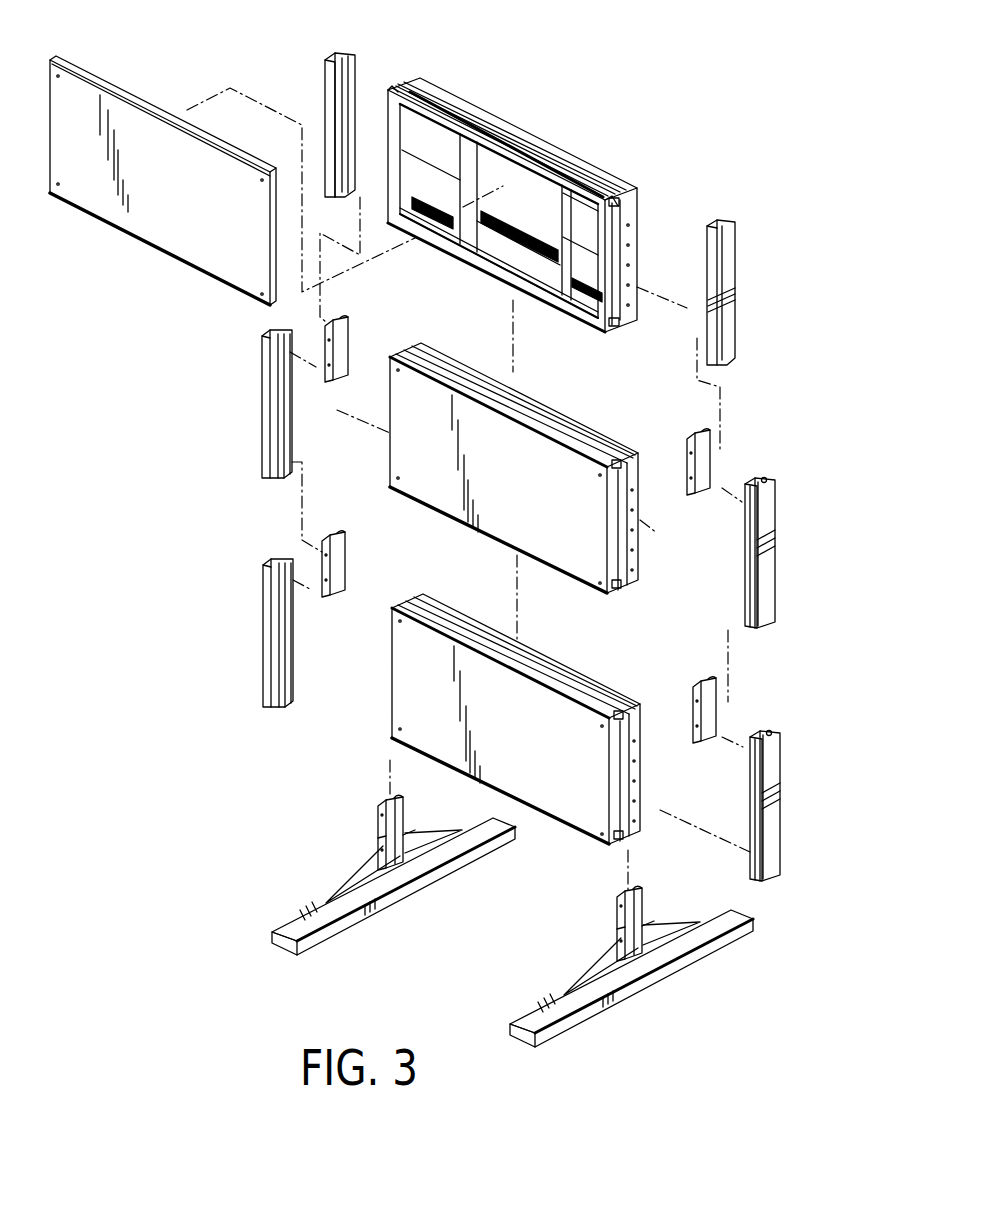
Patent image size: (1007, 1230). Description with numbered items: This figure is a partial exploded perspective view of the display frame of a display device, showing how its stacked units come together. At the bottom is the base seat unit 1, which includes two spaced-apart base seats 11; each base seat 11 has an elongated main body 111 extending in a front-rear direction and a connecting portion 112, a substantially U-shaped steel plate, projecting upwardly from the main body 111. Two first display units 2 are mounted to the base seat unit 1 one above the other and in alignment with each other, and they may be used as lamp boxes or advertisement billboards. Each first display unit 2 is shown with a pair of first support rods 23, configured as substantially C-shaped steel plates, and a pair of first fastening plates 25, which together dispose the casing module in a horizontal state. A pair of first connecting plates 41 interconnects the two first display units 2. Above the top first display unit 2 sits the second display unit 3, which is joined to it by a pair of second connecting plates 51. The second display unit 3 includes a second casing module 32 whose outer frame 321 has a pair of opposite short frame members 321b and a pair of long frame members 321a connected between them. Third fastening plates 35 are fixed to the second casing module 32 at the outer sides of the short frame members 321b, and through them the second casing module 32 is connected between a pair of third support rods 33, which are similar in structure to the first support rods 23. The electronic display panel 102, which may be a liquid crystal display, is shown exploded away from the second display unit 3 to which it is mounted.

The base seat unit 1 is at (235, 832).
The first display unit 2 is at (758, 430).
The second display unit 3 is at (697, 163).
The base seat 11 is at (487, 930).
The first support rod 23 is at (262, 404).
The first fastening plate 25 is at (397, 352).
The second casing module 32 is at (522, 120).
The third support rod 33 is at (327, 78).
The third fastening plate 35 is at (398, 82).
The first connecting plate 41 is at (336, 552).
The second connecting plate 51 is at (345, 337).
The electronic display panel 102 is at (160, 230).
The main body 111 is at (362, 910).
The connecting portion 112 is at (390, 822).
The outer frame 321 is at (550, 167).
The long frame member 321a is at (577, 180).
The short frame member 321b is at (613, 263).